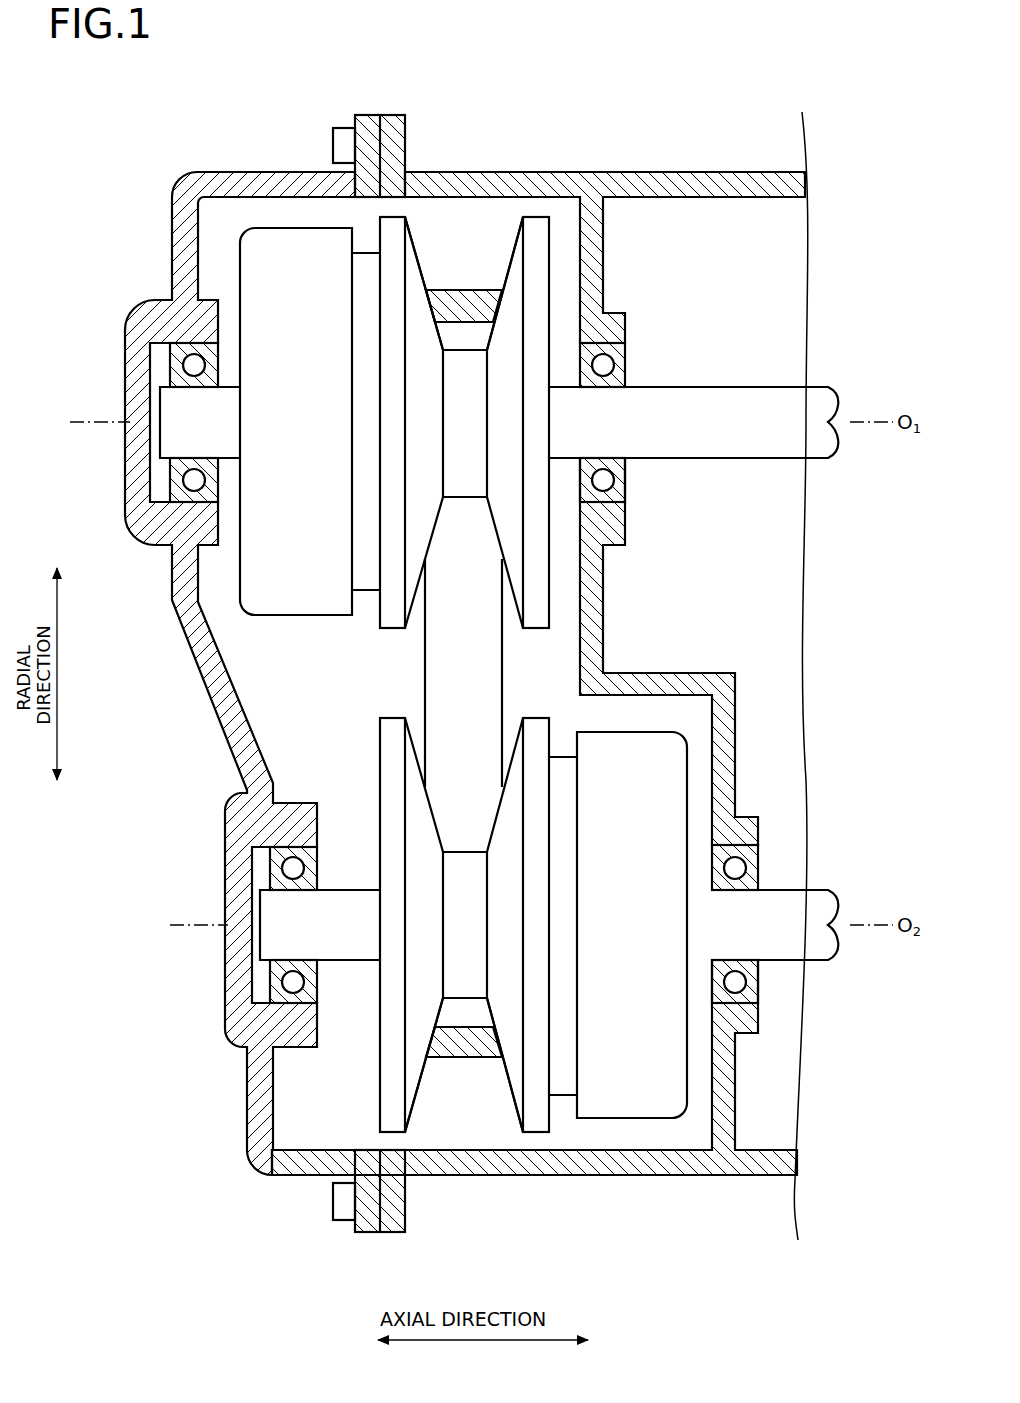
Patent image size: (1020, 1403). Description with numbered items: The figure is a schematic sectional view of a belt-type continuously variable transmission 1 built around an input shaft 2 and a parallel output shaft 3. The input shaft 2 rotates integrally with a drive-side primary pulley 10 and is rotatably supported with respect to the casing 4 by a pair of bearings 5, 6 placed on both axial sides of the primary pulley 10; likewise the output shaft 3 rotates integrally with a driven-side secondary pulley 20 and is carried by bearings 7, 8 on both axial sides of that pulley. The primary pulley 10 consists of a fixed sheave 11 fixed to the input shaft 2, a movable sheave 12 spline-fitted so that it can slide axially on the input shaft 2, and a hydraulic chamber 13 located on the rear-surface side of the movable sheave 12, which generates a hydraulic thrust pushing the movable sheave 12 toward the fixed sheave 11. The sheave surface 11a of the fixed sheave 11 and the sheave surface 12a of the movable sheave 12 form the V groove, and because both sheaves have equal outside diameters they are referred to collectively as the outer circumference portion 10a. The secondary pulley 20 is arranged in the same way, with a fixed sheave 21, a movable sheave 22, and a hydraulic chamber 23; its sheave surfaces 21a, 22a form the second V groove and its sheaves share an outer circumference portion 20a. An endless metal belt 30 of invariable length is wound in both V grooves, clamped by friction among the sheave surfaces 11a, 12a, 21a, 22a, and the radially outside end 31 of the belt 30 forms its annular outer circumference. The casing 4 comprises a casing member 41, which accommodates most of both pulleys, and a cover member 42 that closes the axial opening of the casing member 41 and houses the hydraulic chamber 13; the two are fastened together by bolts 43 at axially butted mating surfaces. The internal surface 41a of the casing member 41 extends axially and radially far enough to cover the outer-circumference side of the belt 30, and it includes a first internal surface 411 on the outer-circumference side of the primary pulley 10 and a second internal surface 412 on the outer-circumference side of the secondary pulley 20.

The belt-type continuously variable transmission 1 is at (558, 66).
The input shaft 2 is at (820, 400).
The output shaft 3 is at (820, 905).
The casing 4 is at (465, 675).
The bearing 5 is at (165, 352).
The bearing 6 is at (627, 352).
The bearing 7 is at (265, 856).
The bearing 8 is at (760, 858).
The primary pulley 10 is at (488, 348).
The outer circumference portion of the primary pulley 10a is at (537, 217).
The fixed sheave 11 is at (492, 348).
The sheave surface 11a is at (510, 262).
The movable sheave 12 is at (425, 348).
The sheave surface 12a is at (419, 262).
The hydraulic chamber 13 is at (298, 228).
The secondary pulley 20 is at (359, 1003).
The outer circumference portion of the secondary pulley 20a is at (537, 1134).
The fixed sheave 21 is at (427, 1003).
The sheave surface 21a is at (418, 1085).
The movable sheave 22 is at (493, 1003).
The sheave surface 22a is at (509, 1086).
The hydraulic chamber 23 is at (630, 1120).
The belt 30 is at (424, 676).
The radially outside end 31 is at (472, 1057).
The casing member 41 is at (640, 170).
The internal surface 41a is at (333, 675).
The first internal surface 411 is at (400, 198).
The second internal surface 412 is at (410, 1147).
The cover member 42 is at (222, 170).
The bolt 43 is at (342, 128).